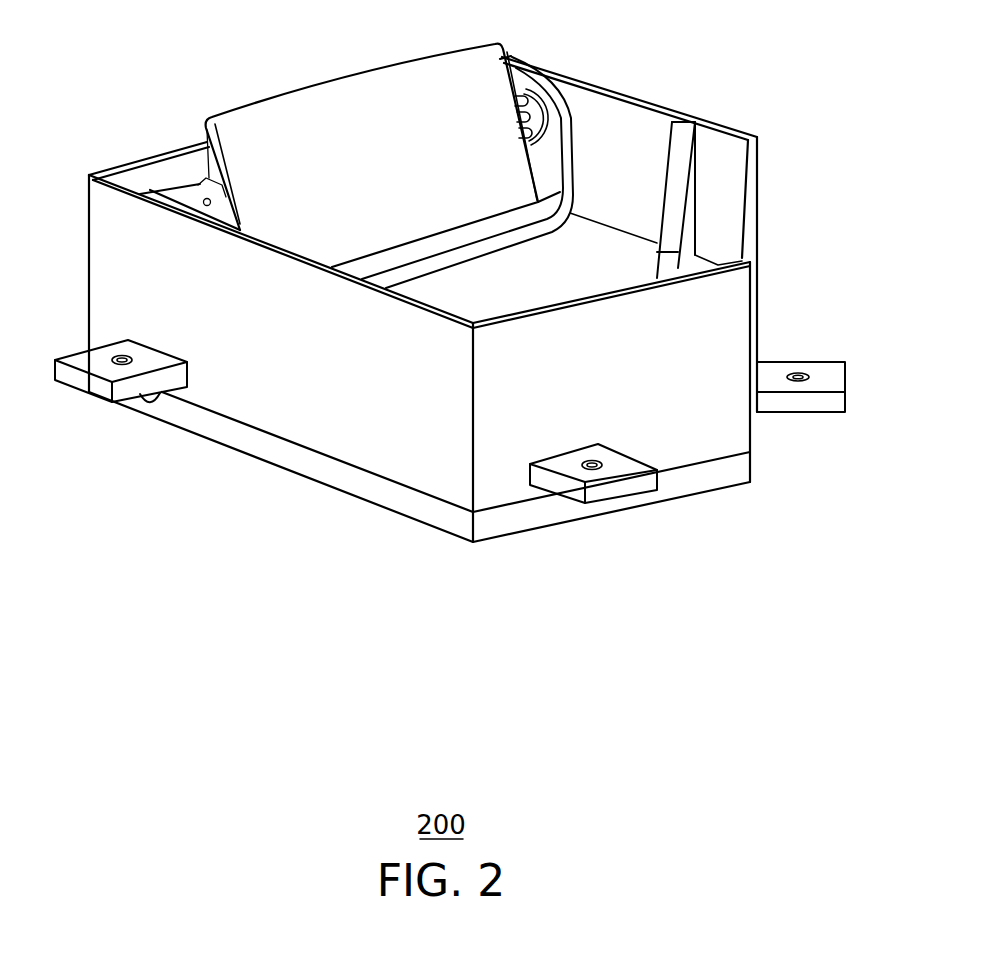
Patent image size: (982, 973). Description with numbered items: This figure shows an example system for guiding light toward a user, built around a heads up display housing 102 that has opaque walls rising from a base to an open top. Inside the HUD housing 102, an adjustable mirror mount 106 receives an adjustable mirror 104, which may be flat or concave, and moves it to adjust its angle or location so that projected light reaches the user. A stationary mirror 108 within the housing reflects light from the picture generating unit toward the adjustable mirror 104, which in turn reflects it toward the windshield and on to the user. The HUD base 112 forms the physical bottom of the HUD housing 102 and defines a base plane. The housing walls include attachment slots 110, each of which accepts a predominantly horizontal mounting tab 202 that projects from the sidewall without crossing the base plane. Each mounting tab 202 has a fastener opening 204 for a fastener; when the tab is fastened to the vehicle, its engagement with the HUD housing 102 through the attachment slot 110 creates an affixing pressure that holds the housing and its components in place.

The HUD housing 102 is at (303, 448).
The adjustable mirror 104 is at (268, 100).
The adjustable mirror mount 106 is at (567, 140).
The stationary mirror 108 is at (695, 177).
The attachment slot 110 is at (157, 352).
The HUD base 112 is at (703, 493).
The mounting tab 202 is at (89, 400).
The fastener opening 204 is at (118, 356).